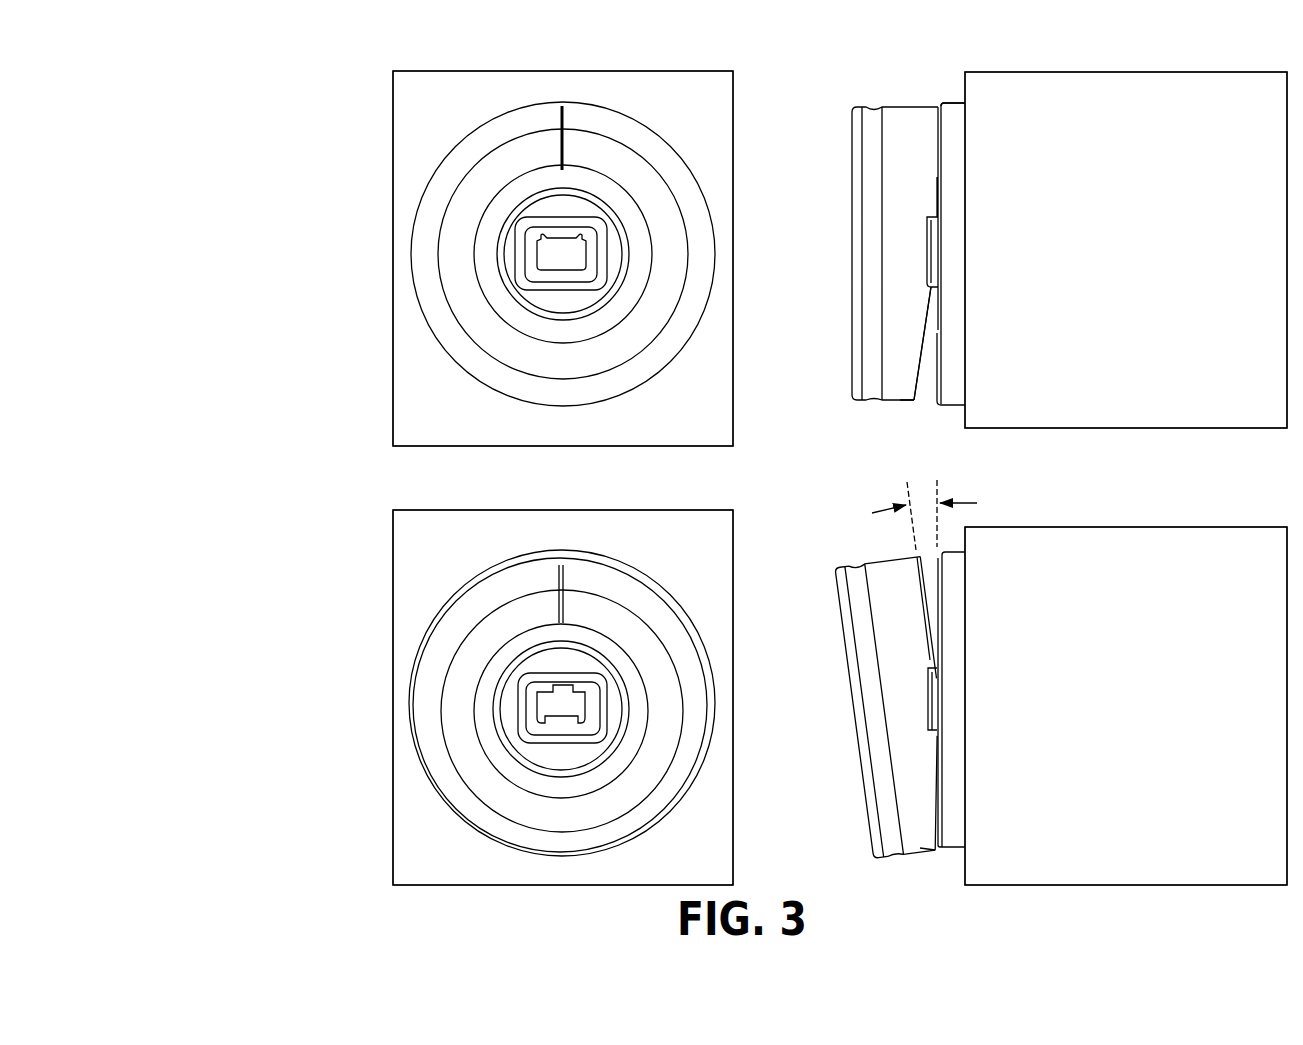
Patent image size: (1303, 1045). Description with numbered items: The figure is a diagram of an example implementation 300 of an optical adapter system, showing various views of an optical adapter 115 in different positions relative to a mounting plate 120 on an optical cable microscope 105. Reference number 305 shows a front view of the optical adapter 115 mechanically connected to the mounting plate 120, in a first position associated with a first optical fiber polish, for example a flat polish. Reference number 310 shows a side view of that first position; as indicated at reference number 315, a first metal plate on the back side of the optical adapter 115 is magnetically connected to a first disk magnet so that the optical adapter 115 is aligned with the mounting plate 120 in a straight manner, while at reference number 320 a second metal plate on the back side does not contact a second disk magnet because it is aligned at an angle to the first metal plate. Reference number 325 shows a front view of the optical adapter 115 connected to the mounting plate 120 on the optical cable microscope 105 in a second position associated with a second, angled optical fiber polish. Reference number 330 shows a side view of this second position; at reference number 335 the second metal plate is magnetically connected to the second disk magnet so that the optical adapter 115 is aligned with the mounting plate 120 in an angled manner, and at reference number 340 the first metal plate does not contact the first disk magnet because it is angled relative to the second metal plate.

The example implementation 300 is at (242, 57).
The front view of the optical adapter in a first position 305 is at (383, 105).
The side view of the first position of the optical adapter 310 is at (858, 100).
The first metal plate magnetically connected to first disk magnet 315 is at (938, 102).
The second metal plate not contacting second disk magnet 320 is at (928, 393).
The front view of the optical adapter in a second position 325 is at (360, 537).
The side view of the second position of the optical adapter 330 is at (858, 540).
The second metal plate magnetically connected to second disk magnet 335 is at (930, 855).
The first metal plate not contacting first disk magnet 340 is at (932, 598).
The optical cable microscope 105 is at (393, 292).
The optical adapter 115 is at (497, 387).
The mounting plate 120 is at (953, 380).